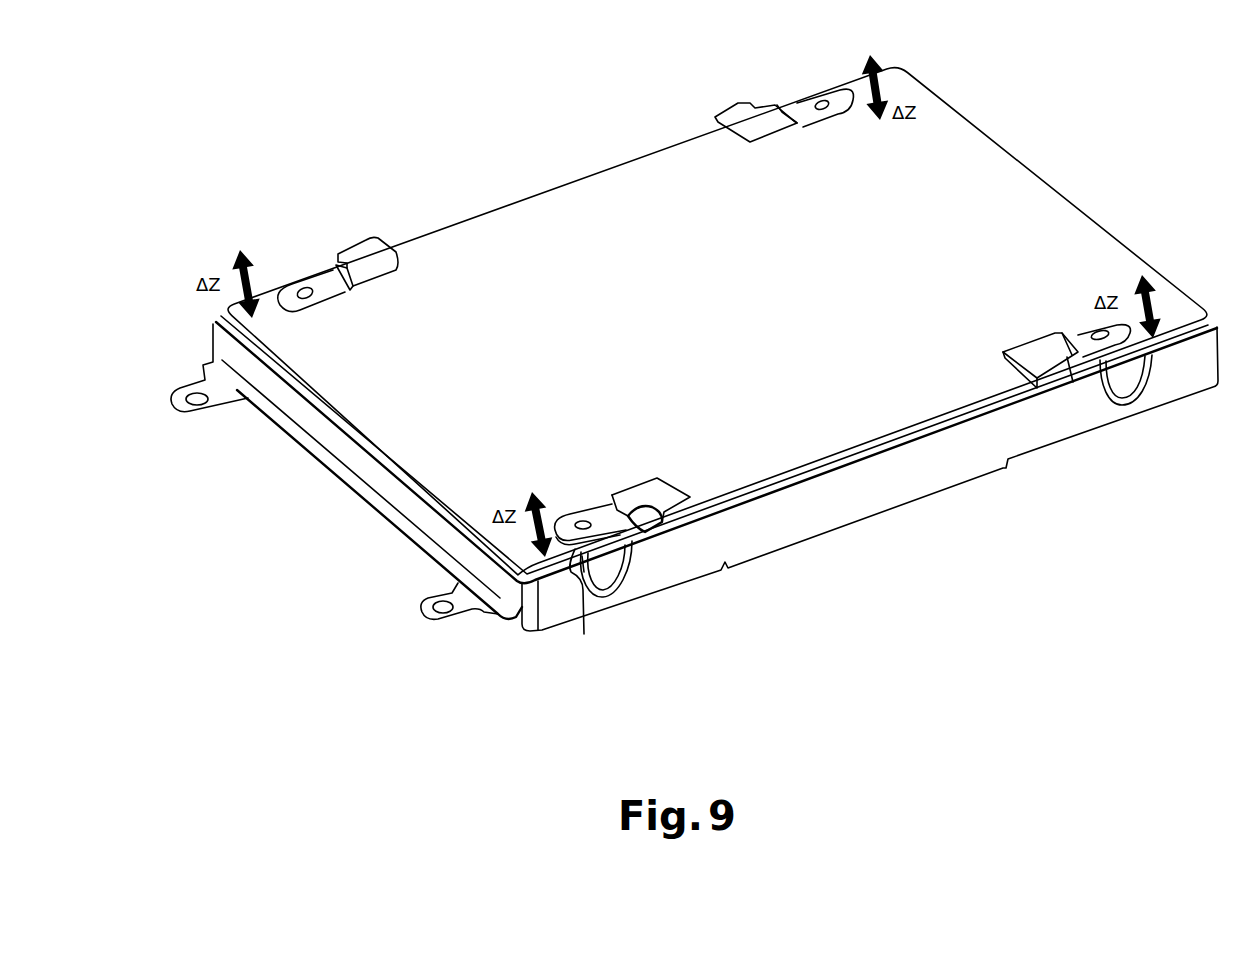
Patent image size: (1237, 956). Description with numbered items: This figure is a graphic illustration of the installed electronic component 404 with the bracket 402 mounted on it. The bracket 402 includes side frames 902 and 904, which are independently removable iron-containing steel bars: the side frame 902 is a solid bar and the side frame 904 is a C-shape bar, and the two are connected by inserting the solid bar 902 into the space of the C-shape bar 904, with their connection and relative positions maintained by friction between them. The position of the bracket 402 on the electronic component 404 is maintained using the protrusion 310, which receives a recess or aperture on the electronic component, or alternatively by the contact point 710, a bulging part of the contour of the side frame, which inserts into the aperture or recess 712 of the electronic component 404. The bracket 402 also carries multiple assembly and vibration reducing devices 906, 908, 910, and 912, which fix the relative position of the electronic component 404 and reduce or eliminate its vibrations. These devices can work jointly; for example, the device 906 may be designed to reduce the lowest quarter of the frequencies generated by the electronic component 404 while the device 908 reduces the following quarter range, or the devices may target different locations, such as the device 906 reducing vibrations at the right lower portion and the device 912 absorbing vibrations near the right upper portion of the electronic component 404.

The bracket 402 is at (1167, 416).
The electronic component 404 is at (752, 308).
The side frame 902 is at (865, 504).
The side frame 904 is at (367, 463).
The device 906 is at (645, 490).
The device 908 is at (400, 272).
The device 910 is at (765, 123).
The device 912 is at (1033, 348).
The protrusion 310 is at (584, 524).
The contact point 710 is at (606, 572).
The aperture or recess 712 is at (584, 634).